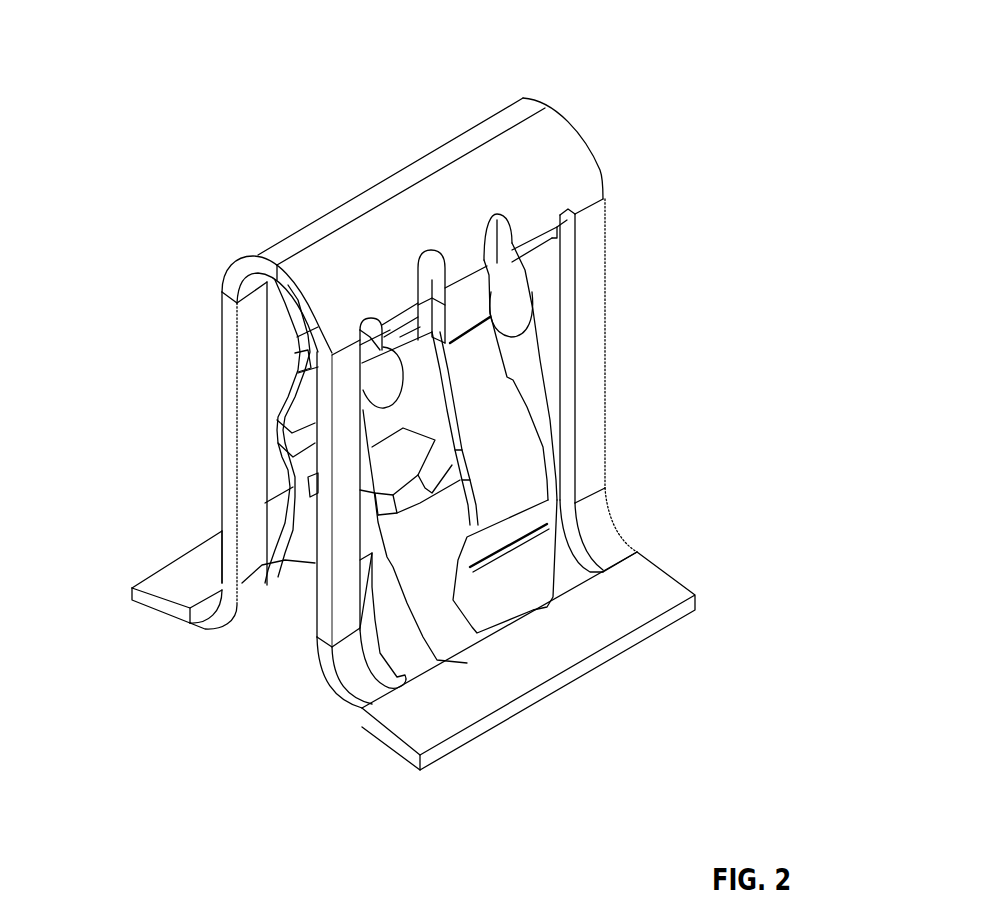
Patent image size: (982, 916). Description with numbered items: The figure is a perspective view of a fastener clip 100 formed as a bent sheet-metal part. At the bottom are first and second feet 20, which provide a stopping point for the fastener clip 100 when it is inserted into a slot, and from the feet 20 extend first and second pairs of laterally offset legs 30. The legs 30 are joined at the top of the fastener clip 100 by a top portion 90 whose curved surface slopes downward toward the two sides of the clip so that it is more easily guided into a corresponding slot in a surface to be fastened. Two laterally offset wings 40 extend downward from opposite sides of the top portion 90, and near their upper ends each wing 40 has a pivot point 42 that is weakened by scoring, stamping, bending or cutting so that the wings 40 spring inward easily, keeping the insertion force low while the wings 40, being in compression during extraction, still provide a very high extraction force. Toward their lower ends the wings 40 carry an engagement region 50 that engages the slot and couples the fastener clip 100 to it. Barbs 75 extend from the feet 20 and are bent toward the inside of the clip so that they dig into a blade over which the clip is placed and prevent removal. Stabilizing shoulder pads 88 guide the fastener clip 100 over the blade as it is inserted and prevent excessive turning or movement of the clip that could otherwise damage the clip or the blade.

The fastener clip 100 is at (697, 99).
The top portion 90 is at (543, 133).
The pivot point 42 is at (462, 252).
The laterally offset legs 30 is at (600, 408).
The feet 20 is at (170, 580).
The wings 40 is at (492, 411).
The stabilizing shoulder pads 88 is at (512, 316).
The barbs 75 is at (300, 507).
The engagement region 50 is at (513, 565).